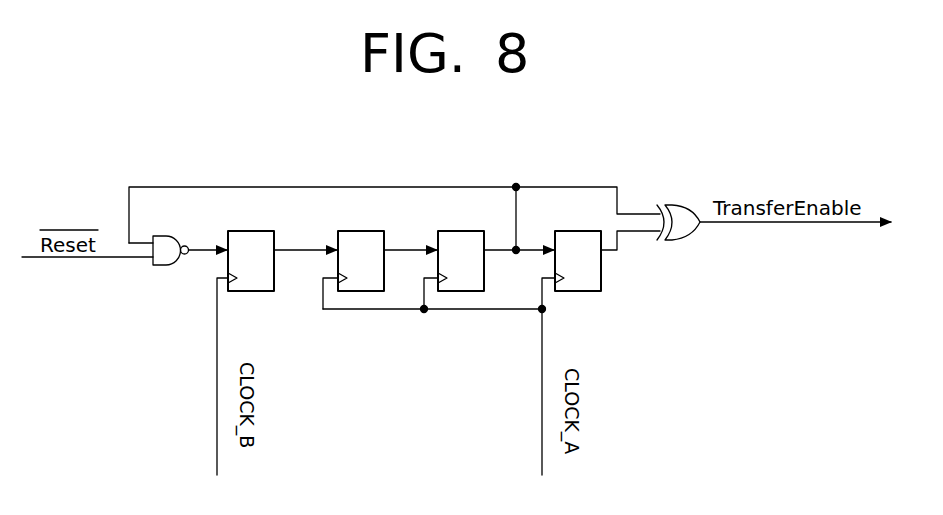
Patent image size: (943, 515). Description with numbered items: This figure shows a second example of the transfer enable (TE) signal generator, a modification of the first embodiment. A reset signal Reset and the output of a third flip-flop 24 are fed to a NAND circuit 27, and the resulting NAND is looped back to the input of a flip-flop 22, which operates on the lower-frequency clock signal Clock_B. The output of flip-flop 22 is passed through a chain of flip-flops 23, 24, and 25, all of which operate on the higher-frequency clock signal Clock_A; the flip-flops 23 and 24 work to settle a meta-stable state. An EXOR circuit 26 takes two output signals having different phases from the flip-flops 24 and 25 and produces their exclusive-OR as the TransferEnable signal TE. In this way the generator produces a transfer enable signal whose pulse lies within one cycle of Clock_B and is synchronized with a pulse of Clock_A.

The flip-flop 22 is at (256, 292).
The flip-flop 23 is at (360, 292).
The third flip-flop 24 is at (462, 292).
The flip-flop 25 is at (580, 292).
The EXOR circuit 26 is at (673, 241).
The NAND circuit 27 is at (157, 266).